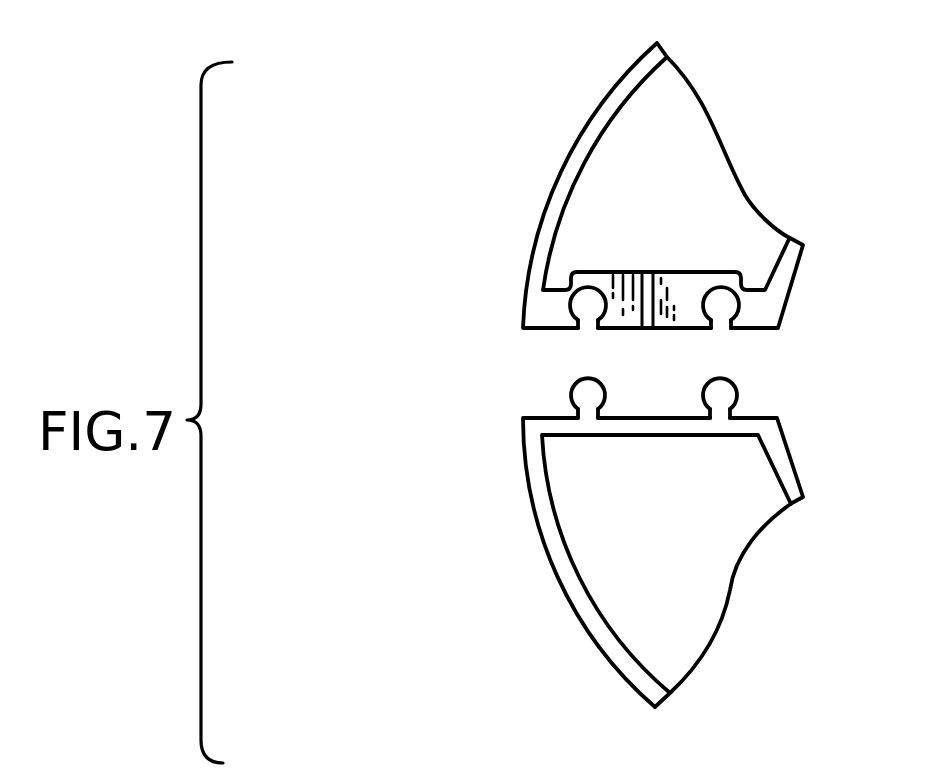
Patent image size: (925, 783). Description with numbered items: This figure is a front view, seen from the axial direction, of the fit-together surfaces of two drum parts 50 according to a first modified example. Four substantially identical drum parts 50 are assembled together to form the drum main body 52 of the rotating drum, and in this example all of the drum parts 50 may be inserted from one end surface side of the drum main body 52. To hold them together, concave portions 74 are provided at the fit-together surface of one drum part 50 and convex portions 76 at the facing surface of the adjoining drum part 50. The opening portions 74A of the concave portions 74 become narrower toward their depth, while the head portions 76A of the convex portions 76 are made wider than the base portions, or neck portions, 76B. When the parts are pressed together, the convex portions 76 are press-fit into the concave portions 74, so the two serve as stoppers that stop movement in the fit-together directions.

The drum part 50 is at (584, 119).
The drum main body 52 is at (474, 264).
The concave portion 74 is at (645, 351).
The opening portion 74A is at (812, 378).
The convex portion 76 is at (583, 466).
The head portion 76A is at (583, 393).
The base portion 76B is at (587, 412).